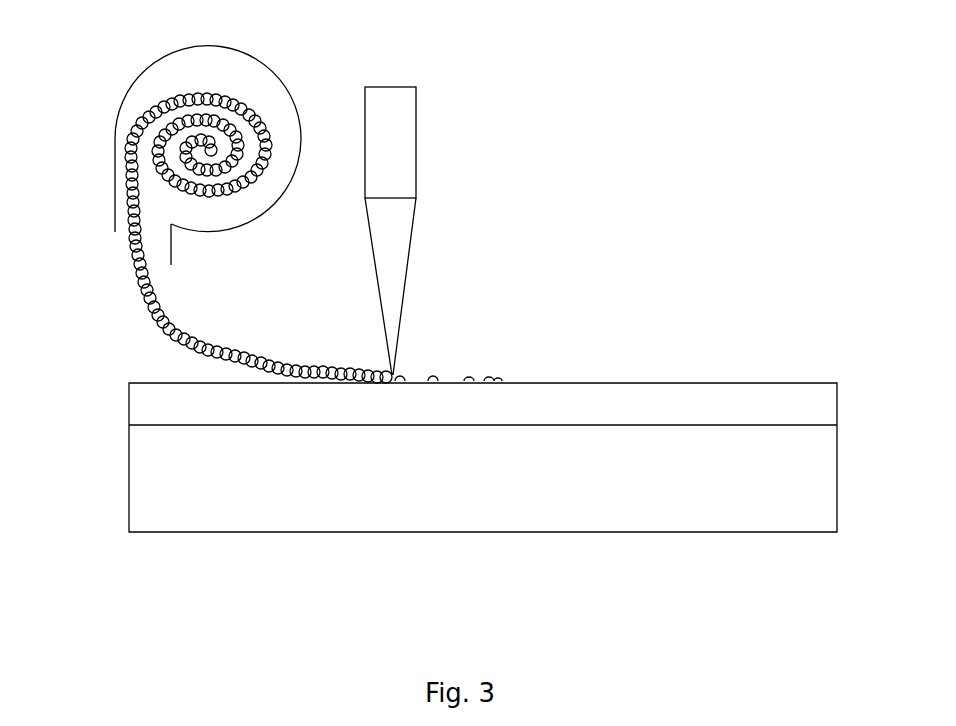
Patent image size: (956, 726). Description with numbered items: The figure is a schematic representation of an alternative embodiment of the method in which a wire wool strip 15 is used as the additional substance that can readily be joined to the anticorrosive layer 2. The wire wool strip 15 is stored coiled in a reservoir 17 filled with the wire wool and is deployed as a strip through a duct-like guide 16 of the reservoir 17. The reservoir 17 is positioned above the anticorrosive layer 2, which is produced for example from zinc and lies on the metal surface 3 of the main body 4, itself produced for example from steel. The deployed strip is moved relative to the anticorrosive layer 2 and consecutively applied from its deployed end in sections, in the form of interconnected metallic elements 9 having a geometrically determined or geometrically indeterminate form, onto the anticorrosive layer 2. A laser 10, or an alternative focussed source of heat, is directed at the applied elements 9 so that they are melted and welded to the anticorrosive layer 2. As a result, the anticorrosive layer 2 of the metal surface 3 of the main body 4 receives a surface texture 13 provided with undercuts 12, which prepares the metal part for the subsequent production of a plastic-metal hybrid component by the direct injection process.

The anticorrosive layer 2 is at (515, 402).
The metal surface 3 is at (640, 422).
The main body 4 is at (728, 460).
The metallic elements 9 is at (432, 377).
The laser 10 is at (407, 262).
The undercuts 12 is at (492, 377).
The surface texture 13 is at (468, 383).
The wire wool strip 15 is at (240, 102).
The duct-like guide 16 is at (115, 197).
The reservoir 17 is at (300, 120).